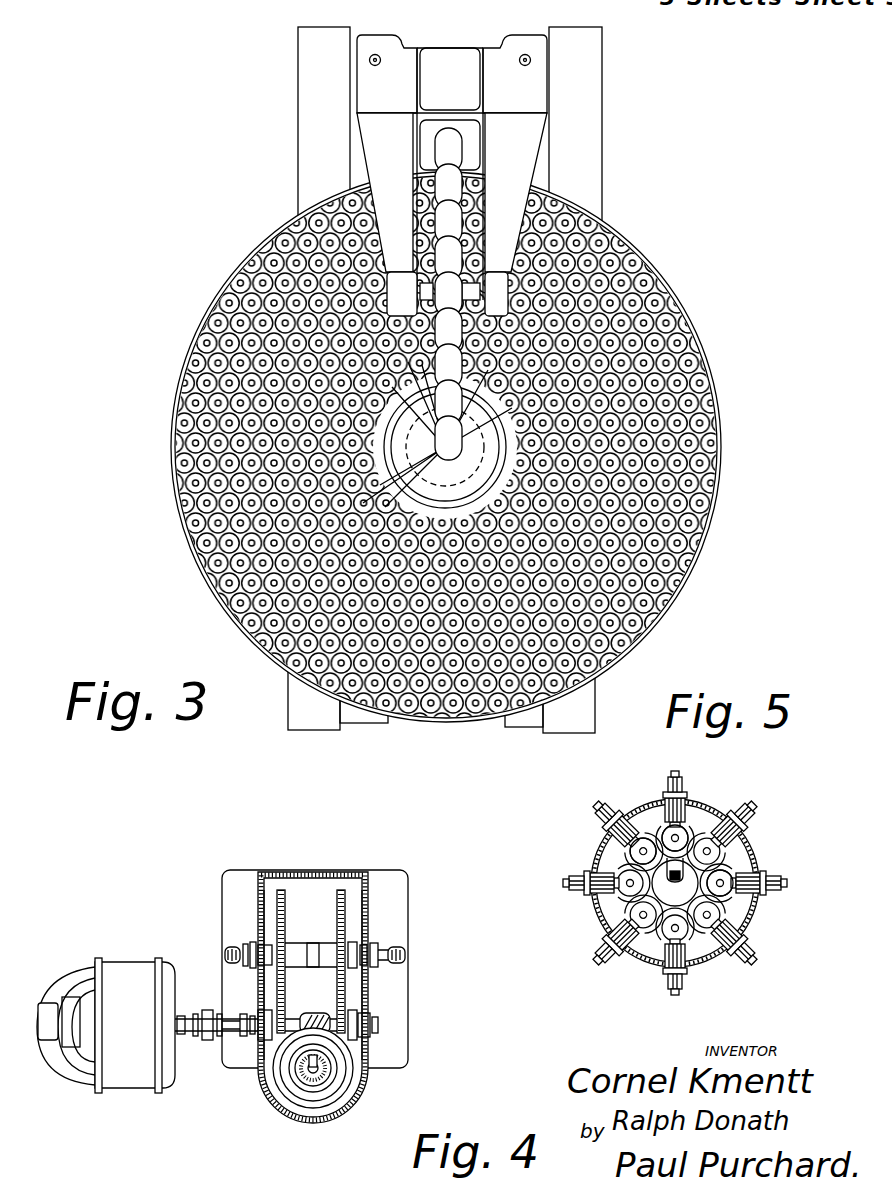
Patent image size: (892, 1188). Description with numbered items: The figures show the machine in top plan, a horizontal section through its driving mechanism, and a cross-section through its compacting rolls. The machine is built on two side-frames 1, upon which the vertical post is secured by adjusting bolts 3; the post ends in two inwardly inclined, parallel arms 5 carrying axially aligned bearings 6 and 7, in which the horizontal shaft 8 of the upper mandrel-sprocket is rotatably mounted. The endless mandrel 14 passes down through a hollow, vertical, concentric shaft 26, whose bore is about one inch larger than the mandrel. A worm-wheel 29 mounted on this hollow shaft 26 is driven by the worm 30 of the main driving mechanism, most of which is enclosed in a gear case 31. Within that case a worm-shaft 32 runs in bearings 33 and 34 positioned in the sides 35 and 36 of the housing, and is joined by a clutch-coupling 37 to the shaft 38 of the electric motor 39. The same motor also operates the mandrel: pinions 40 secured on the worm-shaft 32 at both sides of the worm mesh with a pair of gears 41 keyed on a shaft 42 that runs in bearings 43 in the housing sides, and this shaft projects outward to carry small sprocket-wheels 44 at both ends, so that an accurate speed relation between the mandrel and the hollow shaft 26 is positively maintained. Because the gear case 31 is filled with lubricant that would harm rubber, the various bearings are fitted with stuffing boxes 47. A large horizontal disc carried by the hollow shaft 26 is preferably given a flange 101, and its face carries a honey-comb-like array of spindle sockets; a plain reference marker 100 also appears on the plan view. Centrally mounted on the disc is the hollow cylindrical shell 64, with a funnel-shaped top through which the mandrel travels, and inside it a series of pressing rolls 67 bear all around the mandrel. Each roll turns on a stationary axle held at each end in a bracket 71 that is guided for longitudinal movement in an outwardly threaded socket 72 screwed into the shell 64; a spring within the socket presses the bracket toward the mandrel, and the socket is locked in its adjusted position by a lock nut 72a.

In FIG. 3, the side-frames 1 is at (298, 77).
In FIG. 3, the adjusting bolts 3 is at (531, 58).
In FIG. 3, the inwardly inclined parallel arms 5 is at (514, 172).
In FIG. 3, the bearing 6 is at (495, 300).
In FIG. 3, the bearing 7 is at (401, 292).
In FIG. 3, the horizontal shaft 8 is at (483, 262).
In FIG. 3, the hollow cylindrical shell 64 is at (493, 461).
In FIG. 5, the hollow cylindrical shell 64 is at (703, 830).
In FIG. 3, the rim 100 is at (615, 230).
In FIG. 3, the flange 101 is at (719, 499).
In FIG. 4, the mandrel 14 is at (303, 1093).
In FIG. 5, the mandrel 14 is at (670, 897).
In FIG. 4, the hollow vertical shaft 26 is at (330, 1080).
In FIG. 4, the worm-wheel 29 is at (334, 1107).
In FIG. 4, the worm 30 is at (320, 1013).
In FIG. 4, the gear case 31 is at (302, 870).
In FIG. 4, the worm-shaft 32 is at (303, 1018).
In FIG. 4, the bearing 33 is at (368, 1047).
In FIG. 4, the bearing 34 is at (258, 1063).
In FIG. 4, the side of housing 35 is at (370, 897).
In FIG. 4, the side of housing 36 is at (258, 923).
In FIG. 4, the clutch-coupling 37 is at (188, 1000).
In FIG. 4, the motor shaft 38 is at (188, 1050).
In FIG. 4, the electric motor 39 is at (110, 960).
In FIG. 4, the pinions 40 is at (348, 1013).
In FIG. 4, the gears 41 is at (280, 890).
In FIG. 4, the shaft 42 is at (407, 953).
In FIG. 4, the bearings 43 is at (364, 884).
In FIG. 4, the small sprocket-wheels 44 is at (230, 947).
In FIG. 4, the stuffing boxes 47 is at (374, 942).
In FIG. 5, the pressing rolls 67 is at (703, 835).
In FIG. 5, the bracket 71 is at (735, 868).
In FIG. 5, the threaded sleeve or socket 72 is at (628, 848).
In FIG. 5, the lock nut 72a is at (636, 790).